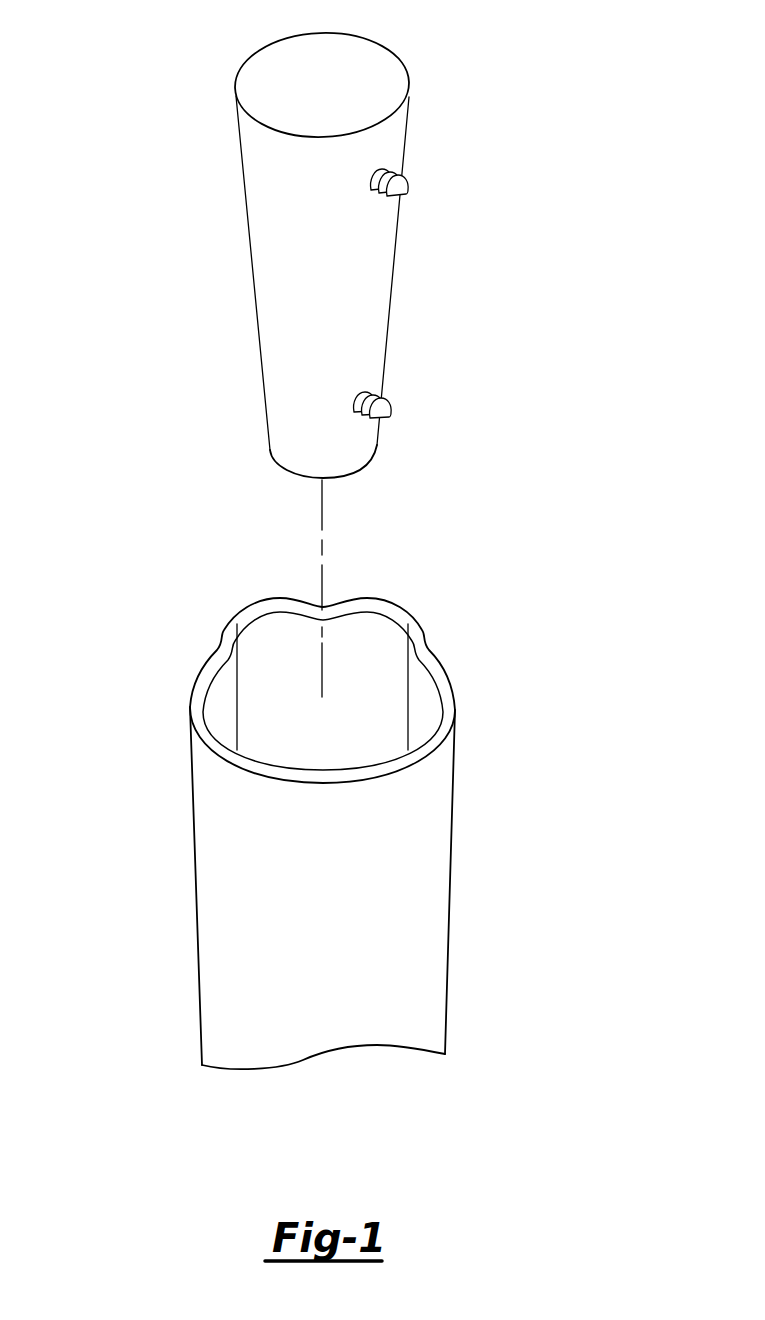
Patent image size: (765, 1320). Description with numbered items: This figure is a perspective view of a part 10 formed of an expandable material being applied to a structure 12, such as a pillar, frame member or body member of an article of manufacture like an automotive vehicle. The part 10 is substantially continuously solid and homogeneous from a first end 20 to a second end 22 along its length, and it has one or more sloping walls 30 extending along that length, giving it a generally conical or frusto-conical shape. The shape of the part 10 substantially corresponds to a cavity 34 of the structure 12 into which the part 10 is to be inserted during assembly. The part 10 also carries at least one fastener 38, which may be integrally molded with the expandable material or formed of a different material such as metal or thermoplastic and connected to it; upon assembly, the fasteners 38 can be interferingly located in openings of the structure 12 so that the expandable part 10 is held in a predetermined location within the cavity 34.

The part 10 is at (193, 232).
The structure 12 is at (148, 985).
The first end 20 is at (383, 78).
The second end 22 is at (358, 472).
The sloping walls 30 is at (273, 368).
The cavity 34 is at (378, 650).
The fasteners 38 is at (430, 390).